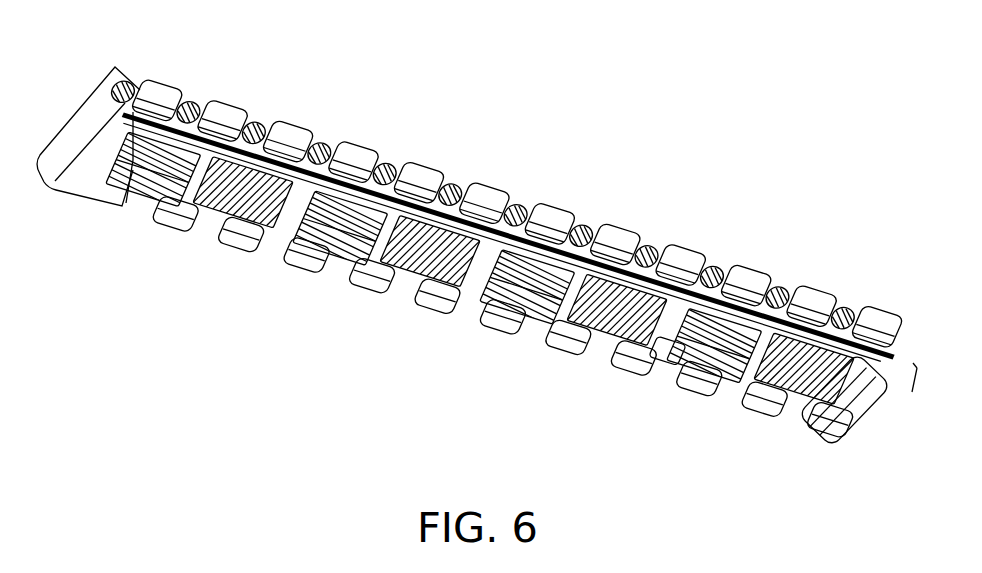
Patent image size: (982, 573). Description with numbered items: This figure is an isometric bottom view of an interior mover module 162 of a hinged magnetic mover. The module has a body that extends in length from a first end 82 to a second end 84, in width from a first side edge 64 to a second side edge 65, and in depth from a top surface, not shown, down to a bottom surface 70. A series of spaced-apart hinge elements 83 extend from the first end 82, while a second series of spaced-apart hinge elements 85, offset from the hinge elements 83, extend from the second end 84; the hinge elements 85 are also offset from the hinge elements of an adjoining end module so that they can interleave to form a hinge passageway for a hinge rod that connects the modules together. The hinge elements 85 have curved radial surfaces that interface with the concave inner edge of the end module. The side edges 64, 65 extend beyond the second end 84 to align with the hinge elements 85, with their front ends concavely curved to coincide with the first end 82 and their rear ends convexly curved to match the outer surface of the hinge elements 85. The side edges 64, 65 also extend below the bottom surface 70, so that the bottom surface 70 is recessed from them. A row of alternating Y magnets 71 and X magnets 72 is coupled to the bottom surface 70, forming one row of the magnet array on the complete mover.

The interior mover module 162 is at (414, 109).
The first side edge 64 is at (870, 420).
The second side edge 65 is at (93, 120).
The bottom surface 70 is at (329, 211).
The Y magnet 71 is at (205, 200).
The X magnet 72 is at (137, 190).
The first end 82 is at (157, 100).
The hinge elements 83 is at (410, 157).
The second end 84 is at (670, 340).
The hinge elements 85 is at (483, 323).